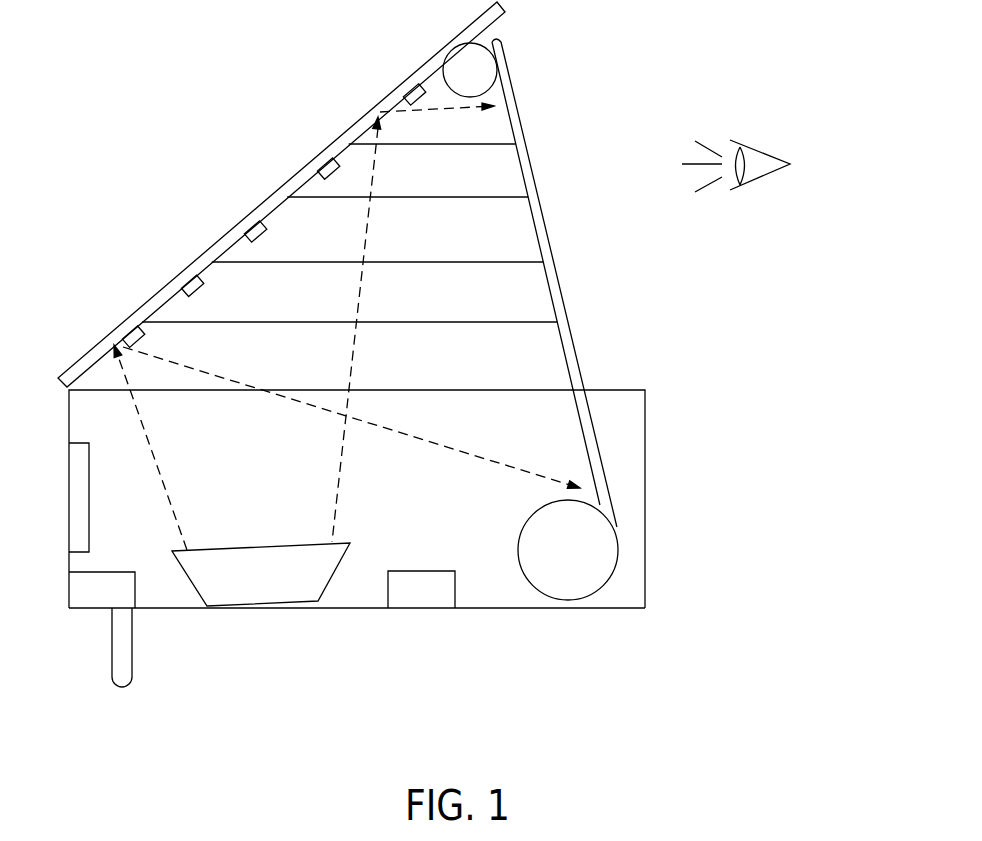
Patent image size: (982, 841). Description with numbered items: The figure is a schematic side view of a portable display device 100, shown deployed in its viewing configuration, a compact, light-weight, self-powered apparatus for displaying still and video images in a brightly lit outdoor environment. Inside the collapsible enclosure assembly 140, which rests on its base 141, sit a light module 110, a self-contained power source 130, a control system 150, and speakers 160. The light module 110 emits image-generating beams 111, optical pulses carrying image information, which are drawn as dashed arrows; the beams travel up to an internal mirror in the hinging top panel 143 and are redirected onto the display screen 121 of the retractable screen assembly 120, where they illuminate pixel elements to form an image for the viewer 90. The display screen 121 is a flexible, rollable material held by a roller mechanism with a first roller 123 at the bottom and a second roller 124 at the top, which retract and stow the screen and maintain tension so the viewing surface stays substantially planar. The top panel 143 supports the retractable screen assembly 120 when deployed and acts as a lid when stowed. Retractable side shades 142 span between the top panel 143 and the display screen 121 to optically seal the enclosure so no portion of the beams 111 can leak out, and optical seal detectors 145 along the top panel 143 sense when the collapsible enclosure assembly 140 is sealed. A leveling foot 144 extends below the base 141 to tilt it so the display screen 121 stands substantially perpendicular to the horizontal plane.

The portable display device 100 is at (205, 62).
The light module 110 is at (282, 581).
The image-generating beams 111 is at (407, 112).
The retractable screen assembly 120 is at (515, 52).
The display screen 121 is at (543, 243).
The first roller 123 is at (589, 561).
The second roller 124 is at (492, 83).
The self-contained power source 130 is at (122, 602).
The collapsible enclosure assembly 140 is at (668, 578).
The base 141 is at (472, 608).
The retractable side shades 142 is at (476, 297).
The top panel 143 is at (258, 203).
The leveling feet 144 is at (112, 655).
The optical seal detectors 145 is at (340, 172).
The control system 150 is at (443, 602).
The speakers 160 is at (90, 500).
The viewer 90 is at (767, 177).